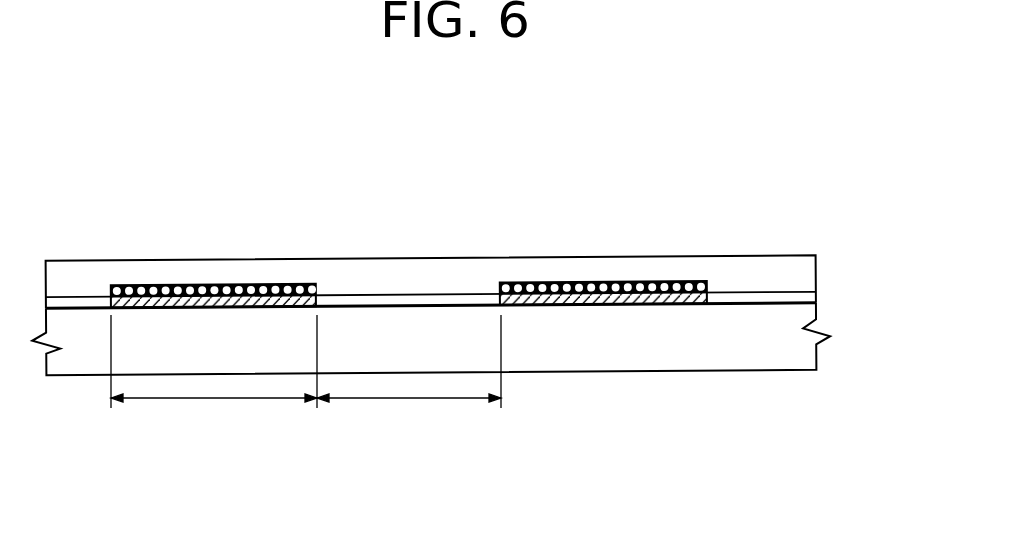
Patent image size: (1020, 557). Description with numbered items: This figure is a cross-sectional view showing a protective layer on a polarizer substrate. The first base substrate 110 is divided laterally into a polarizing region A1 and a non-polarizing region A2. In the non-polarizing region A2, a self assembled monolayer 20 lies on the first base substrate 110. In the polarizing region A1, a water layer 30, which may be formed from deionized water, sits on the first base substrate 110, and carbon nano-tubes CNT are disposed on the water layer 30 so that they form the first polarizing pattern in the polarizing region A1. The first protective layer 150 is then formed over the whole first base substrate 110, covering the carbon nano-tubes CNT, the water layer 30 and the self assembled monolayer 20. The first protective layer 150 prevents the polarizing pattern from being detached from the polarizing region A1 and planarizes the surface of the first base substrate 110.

The first protective layer 150 is at (815, 268).
The first base substrate 110 is at (810, 355).
The self assembled monolayer 20 is at (410, 301).
The water layer 30 is at (207, 285).
The carbon nano-tube CNT is at (275, 290).
The polarizing region A1 is at (214, 375).
The non-polarizing region A2 is at (409, 375).